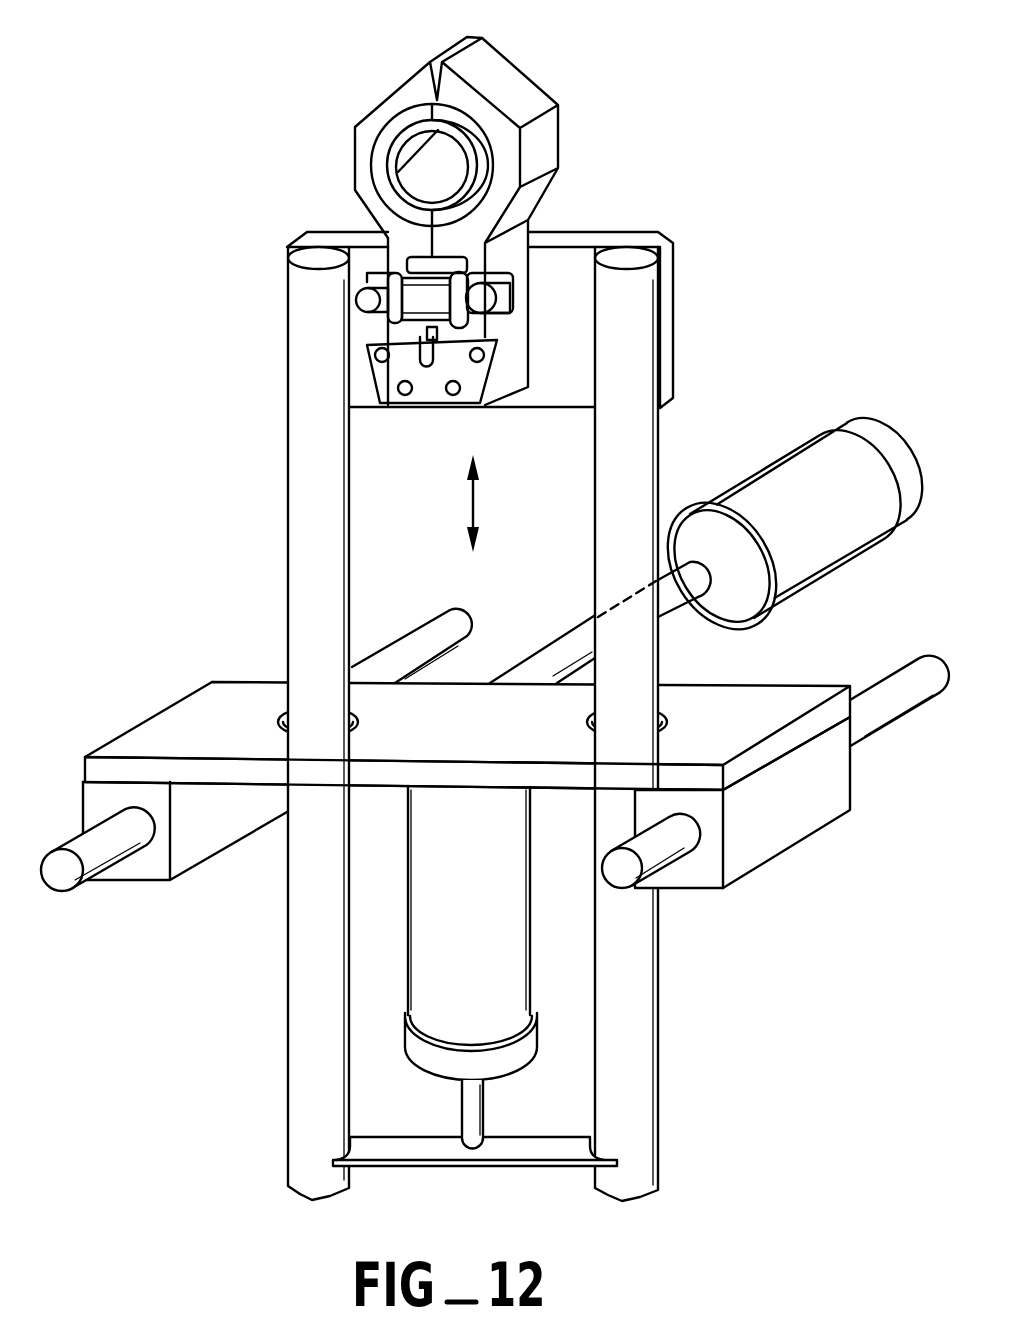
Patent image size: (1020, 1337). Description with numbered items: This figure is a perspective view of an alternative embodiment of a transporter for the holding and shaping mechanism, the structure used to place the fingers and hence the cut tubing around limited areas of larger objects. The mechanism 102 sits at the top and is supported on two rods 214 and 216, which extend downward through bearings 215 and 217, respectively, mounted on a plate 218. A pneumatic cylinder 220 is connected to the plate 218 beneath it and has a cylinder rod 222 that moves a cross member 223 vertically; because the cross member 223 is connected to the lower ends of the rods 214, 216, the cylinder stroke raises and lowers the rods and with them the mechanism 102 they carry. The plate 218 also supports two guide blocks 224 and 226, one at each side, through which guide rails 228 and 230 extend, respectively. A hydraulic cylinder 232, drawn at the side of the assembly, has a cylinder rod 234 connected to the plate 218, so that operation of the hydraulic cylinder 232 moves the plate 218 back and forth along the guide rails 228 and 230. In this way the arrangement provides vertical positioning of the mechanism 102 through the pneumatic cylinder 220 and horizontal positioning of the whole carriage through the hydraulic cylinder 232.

The mechanism 102 is at (587, 177).
The rod 214 is at (658, 443).
The bearing 215 is at (278, 720).
The rod 216 is at (287, 398).
The bearing 217 is at (650, 733).
The plate 218 is at (787, 684).
The pneumatic cylinder 220 is at (537, 1005).
The cylinder rod 222 is at (467, 1112).
The cross member 223 is at (495, 1167).
The guide block 224 is at (702, 875).
The guide block 226 is at (80, 787).
The guide rail 228 is at (893, 718).
The guide rail 230 is at (417, 632).
The hydraulic cylinder 232 is at (778, 462).
The cylinder rod 234 is at (688, 607).